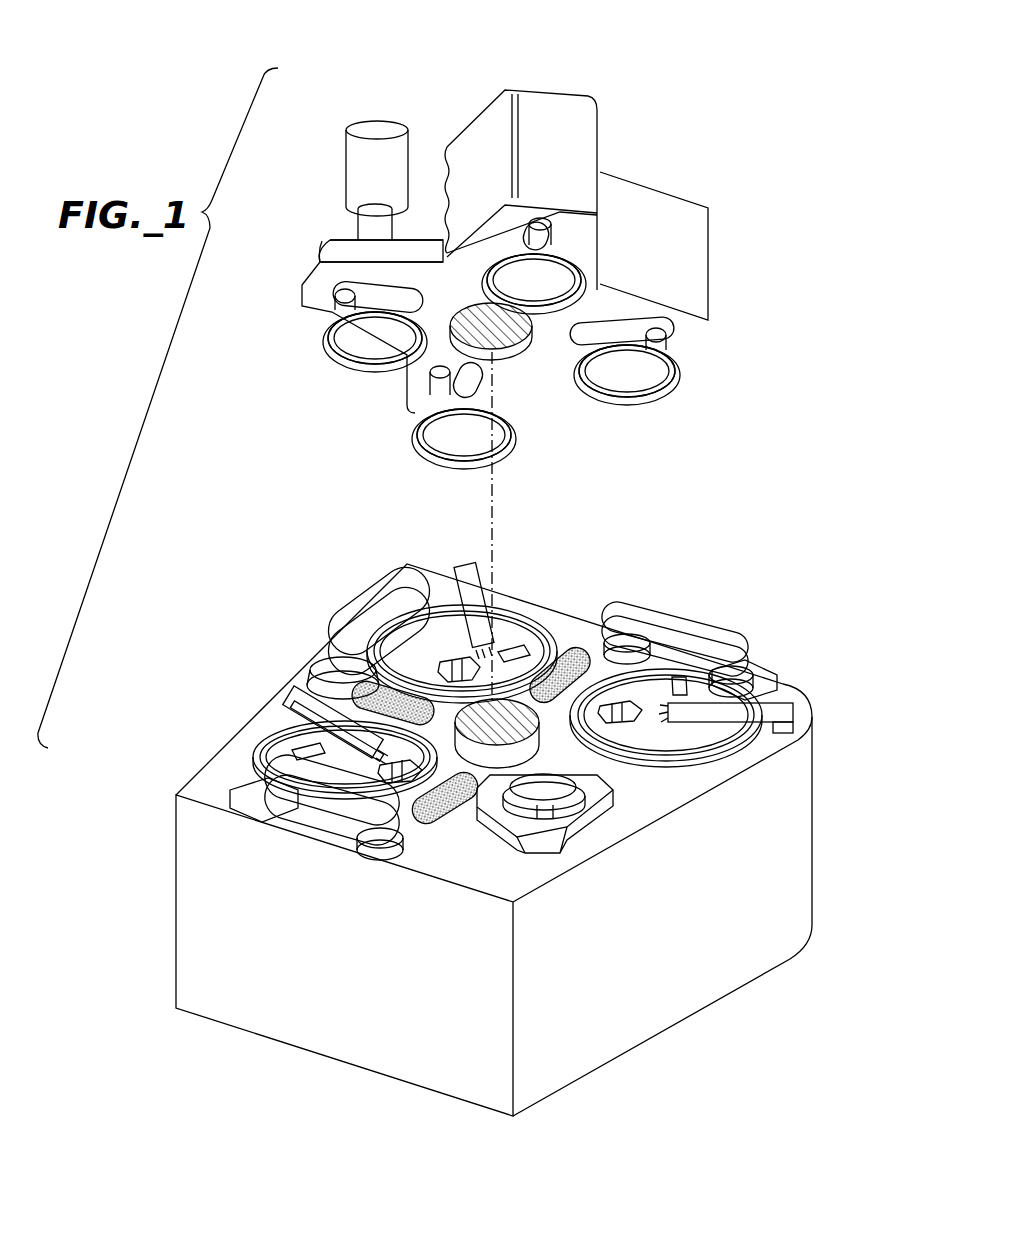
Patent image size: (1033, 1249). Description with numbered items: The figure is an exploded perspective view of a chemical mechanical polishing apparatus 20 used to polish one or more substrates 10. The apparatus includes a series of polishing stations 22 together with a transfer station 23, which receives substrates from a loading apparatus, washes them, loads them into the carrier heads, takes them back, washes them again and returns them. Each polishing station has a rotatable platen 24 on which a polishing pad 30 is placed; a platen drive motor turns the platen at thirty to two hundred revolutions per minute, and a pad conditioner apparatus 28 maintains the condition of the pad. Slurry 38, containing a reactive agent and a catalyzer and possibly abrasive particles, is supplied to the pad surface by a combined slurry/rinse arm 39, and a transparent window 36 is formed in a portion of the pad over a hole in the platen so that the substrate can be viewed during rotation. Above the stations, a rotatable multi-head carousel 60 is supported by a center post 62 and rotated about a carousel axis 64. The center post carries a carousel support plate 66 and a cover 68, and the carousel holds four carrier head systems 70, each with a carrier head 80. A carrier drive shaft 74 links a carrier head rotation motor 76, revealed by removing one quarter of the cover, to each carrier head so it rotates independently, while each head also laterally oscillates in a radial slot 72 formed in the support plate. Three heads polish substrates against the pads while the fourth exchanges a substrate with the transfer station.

The chemical mechanical polishing apparatus 20 is at (647, 44).
The rotatable multi-head carousel 60 is at (728, 295).
The cover 68 is at (600, 124).
The carrier head rotation motor 76 is at (345, 153).
The carousel support plate 66 is at (302, 292).
The carrier head system 70 is at (600, 272).
The carrier head 80 is at (565, 270).
The substrate 10 is at (548, 283).
The radial slot 72 is at (555, 235).
The carrier drive shaft 74 is at (365, 300).
The center post 62 is at (510, 368).
The carousel axis 64 is at (493, 507).
The polishing station 22 is at (553, 612).
The rotatable platen 24 is at (510, 600).
The polishing pad 30 is at (505, 585).
The pad conditioner apparatus 28 is at (358, 605).
The slurry/rinse arm 39 is at (466, 563).
The transparent window 36 is at (520, 648).
The slurry 38 is at (440, 660).
The transfer station 23 is at (510, 850).